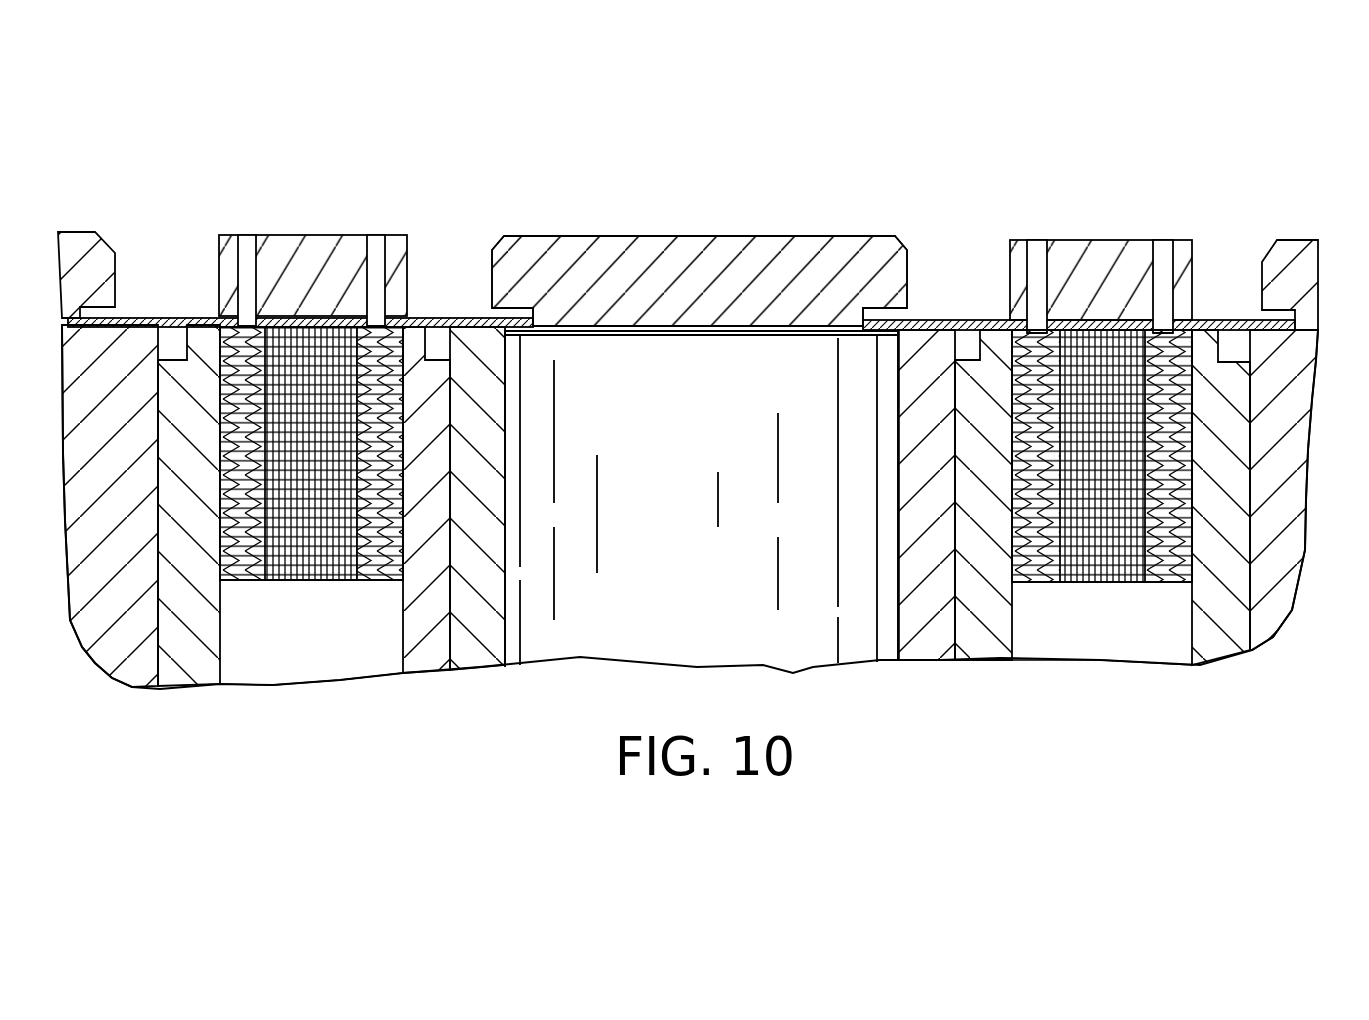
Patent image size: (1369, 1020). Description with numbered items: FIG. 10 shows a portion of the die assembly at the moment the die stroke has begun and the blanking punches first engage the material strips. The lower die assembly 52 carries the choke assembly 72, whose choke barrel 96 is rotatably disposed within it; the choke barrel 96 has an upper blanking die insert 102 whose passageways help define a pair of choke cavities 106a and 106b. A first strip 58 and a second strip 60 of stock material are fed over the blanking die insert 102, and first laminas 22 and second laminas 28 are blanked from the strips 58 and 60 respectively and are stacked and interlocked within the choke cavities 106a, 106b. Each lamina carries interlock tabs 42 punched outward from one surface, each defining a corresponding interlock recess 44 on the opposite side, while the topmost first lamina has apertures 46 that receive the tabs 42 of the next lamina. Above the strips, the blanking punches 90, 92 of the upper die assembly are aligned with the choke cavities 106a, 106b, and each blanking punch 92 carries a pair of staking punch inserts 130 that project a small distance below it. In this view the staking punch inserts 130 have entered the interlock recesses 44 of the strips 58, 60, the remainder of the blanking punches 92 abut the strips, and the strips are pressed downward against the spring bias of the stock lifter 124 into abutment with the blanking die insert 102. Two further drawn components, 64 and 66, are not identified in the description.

The first lamina 22 is at (403, 377).
The second lamina 28 is at (400, 462).
The interlock tab 42 is at (217, 348).
The interlock recess 44 is at (243, 335).
The aperture 46 is at (368, 580).
The lower die assembly 52 is at (1288, 163).
The first material strip 58 is at (140, 318).
The second material strip 60 is at (935, 318).
The housing flange 64 is at (75, 243).
The end cap 66 is at (700, 243).
The choke assembly 72 is at (1308, 550).
The blanking punch 90 is at (220, 168).
The blanking punch 92 is at (310, 243).
The choke barrel 96 is at (80, 392).
The blanking die insert 102 is at (418, 353).
The choke cavity 106a is at (313, 640).
The choke cavity 106b is at (1112, 622).
The stock lifter 124 is at (708, 425).
The staking punch insert 130 is at (245, 243).